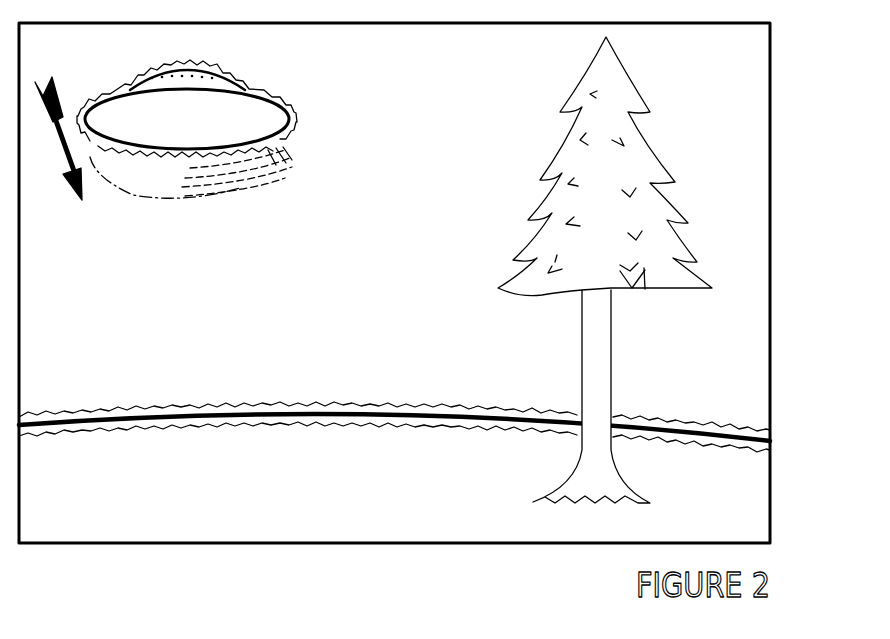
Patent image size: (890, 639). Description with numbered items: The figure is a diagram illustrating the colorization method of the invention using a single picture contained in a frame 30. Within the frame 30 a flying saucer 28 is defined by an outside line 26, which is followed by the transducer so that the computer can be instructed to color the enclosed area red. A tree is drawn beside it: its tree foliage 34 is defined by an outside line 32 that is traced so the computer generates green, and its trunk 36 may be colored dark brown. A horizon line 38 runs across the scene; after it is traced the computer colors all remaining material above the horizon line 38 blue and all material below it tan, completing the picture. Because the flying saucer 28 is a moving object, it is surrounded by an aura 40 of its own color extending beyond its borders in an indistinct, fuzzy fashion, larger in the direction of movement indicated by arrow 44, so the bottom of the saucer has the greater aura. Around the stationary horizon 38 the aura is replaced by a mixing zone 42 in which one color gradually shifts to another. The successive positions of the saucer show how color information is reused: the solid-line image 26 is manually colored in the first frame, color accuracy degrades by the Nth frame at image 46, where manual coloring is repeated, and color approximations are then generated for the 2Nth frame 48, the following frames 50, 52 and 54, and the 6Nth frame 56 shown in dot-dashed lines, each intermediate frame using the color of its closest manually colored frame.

The outside line 26 is at (291, 120).
The flying saucer 28 is at (292, 102).
The frame 30 is at (770, 298).
The outside line 32 is at (528, 293).
The tree foliage 34 is at (514, 196).
The trunk 36 is at (612, 365).
The horizon line 38 is at (280, 414).
The aura 40 is at (233, 74).
The mixing zone 42 is at (170, 406).
The arrow 44 is at (57, 157).
The image of the flying saucer in the Nth frame 46 is at (272, 148).
The 2Nth frame 48 is at (286, 164).
The 3Nth frame 50 is at (278, 172).
The 4Nth frame 52 is at (245, 178).
The 5Nth frame 54 is at (218, 187).
The 6Nth frame 56 is at (160, 198).